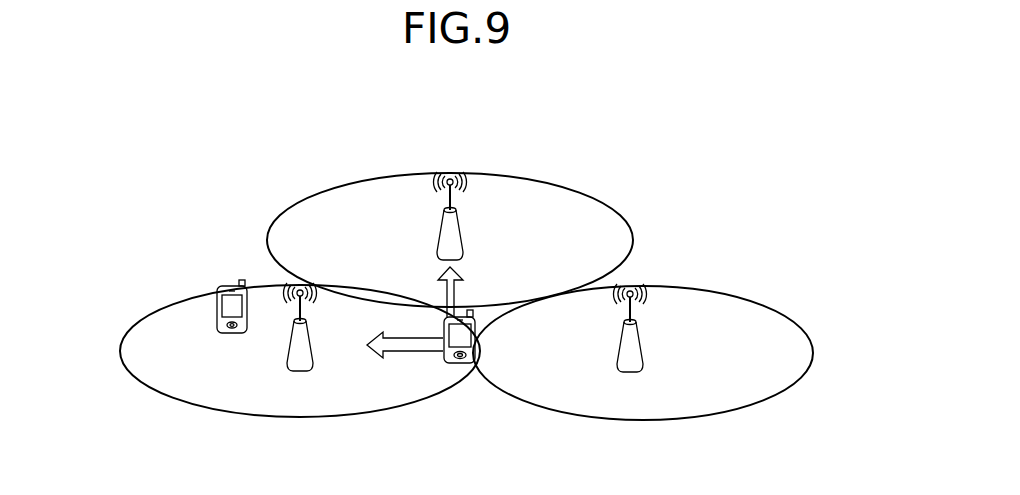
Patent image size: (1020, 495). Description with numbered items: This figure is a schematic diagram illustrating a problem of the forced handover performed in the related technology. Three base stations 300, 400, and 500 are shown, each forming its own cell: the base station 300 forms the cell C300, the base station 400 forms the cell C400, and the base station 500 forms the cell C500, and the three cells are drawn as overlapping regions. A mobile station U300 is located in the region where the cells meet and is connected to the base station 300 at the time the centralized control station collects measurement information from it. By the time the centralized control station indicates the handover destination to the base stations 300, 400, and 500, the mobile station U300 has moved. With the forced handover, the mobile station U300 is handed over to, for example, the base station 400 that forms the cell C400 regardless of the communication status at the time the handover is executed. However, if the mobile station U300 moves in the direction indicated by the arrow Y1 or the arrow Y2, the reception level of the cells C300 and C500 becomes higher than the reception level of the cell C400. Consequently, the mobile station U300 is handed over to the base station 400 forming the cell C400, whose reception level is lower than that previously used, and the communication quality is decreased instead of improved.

The cell C300 is at (172, 291).
The cell C400 is at (731, 289).
The cell C500 is at (562, 177).
The base station 300 is at (296, 352).
The base station 400 is at (635, 352).
The base station 500 is at (453, 232).
The mobile station U300 is at (467, 358).
The arrow Y1 is at (412, 351).
The arrow Y2 is at (446, 300).